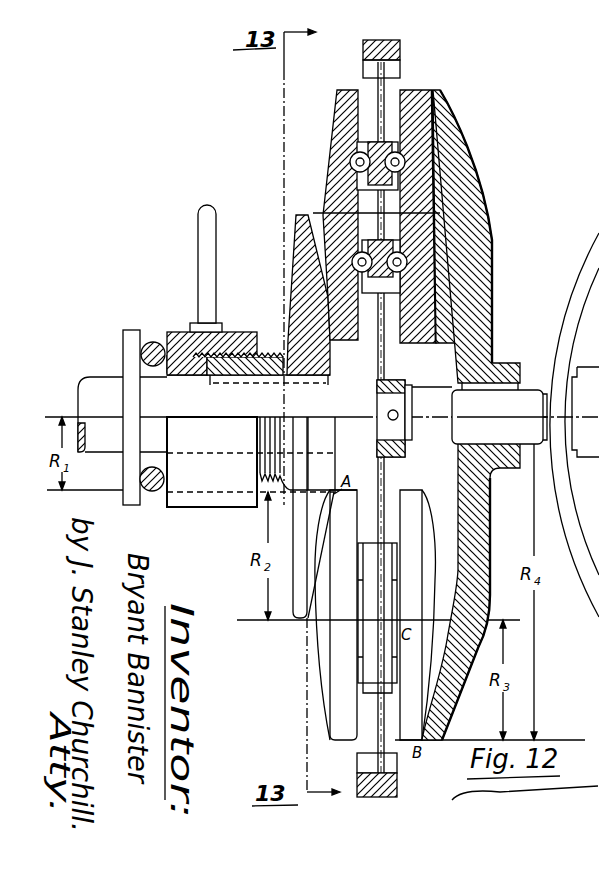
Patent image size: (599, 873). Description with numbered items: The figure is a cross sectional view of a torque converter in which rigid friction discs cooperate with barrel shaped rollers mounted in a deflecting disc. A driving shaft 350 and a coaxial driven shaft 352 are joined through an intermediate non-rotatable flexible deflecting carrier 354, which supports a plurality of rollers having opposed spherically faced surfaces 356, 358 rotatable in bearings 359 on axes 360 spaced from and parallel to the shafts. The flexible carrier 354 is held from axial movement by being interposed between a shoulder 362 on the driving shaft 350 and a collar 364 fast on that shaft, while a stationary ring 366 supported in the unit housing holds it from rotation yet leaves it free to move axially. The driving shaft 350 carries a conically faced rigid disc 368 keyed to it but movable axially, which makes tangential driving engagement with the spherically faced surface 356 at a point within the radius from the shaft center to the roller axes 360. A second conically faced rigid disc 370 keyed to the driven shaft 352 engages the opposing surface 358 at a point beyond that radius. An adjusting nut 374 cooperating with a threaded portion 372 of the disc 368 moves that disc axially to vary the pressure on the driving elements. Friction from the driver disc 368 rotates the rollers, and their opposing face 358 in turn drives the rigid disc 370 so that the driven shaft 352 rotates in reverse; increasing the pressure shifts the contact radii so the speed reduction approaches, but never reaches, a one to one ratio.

The driving shaft 350 is at (94, 377).
The driven shaft 352 is at (540, 390).
The flexible deflecting carrier 354 is at (396, 87).
The spherically faced surface 356 is at (328, 137).
The opposing spherically faced surface 358 is at (438, 190).
The bearings 359 is at (403, 153).
The roller axes 360 is at (366, 210).
The shoulder 362 is at (395, 380).
The collar 364 is at (396, 458).
The stationary ring 366 is at (400, 52).
The conically faced rigid disc 368 is at (294, 250).
The second conically faced rigid disc 370 is at (493, 246).
The threaded portion 372 is at (282, 357).
The adjusting nut 374 is at (178, 332).